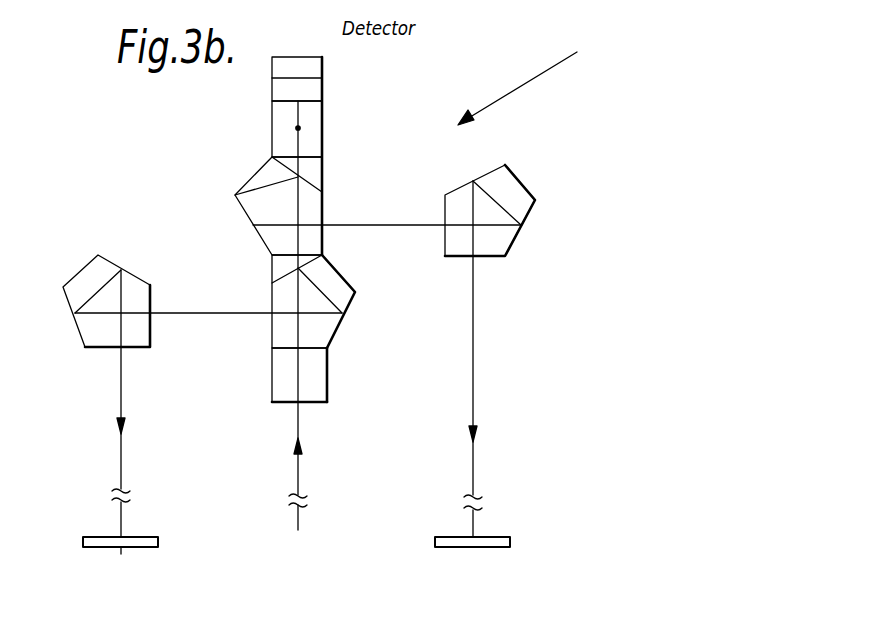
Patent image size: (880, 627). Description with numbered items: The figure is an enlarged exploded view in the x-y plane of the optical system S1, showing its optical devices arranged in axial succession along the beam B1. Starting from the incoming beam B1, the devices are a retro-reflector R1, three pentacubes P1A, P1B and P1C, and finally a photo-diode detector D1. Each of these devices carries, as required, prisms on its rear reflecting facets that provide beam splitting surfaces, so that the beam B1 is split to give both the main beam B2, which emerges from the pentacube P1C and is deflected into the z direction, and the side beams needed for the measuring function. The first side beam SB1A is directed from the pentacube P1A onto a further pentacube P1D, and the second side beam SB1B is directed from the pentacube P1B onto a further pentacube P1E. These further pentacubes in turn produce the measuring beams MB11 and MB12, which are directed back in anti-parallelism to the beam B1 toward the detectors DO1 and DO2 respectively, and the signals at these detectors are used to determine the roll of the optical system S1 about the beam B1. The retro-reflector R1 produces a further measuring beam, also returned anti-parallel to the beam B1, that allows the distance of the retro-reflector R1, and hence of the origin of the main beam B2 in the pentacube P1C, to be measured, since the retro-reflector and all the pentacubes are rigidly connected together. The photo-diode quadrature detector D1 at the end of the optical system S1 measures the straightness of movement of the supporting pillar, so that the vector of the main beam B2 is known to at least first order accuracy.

The photo-diode detector D1 is at (313, 67).
The pentacube P1C is at (322, 118).
The main beam B2 is at (298, 128).
The pentacube P1B is at (322, 210).
The side beam SB1A is at (390, 226).
The pentacube P1A is at (335, 335).
The retro-reflector R1 is at (330, 385).
The beam B1 is at (298, 462).
The side beam SB1B is at (202, 316).
The pentacube P1E is at (85, 348).
The measuring beam MB12 is at (123, 442).
The detector DO2 is at (133, 572).
The optical system S1 is at (532, 82).
The pentacube P1D is at (517, 242).
The measuring beam MB11 is at (474, 378).
The detector DO1 is at (483, 547).